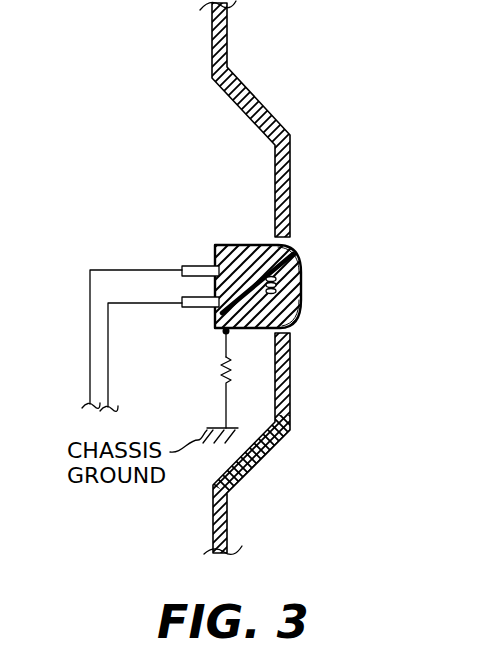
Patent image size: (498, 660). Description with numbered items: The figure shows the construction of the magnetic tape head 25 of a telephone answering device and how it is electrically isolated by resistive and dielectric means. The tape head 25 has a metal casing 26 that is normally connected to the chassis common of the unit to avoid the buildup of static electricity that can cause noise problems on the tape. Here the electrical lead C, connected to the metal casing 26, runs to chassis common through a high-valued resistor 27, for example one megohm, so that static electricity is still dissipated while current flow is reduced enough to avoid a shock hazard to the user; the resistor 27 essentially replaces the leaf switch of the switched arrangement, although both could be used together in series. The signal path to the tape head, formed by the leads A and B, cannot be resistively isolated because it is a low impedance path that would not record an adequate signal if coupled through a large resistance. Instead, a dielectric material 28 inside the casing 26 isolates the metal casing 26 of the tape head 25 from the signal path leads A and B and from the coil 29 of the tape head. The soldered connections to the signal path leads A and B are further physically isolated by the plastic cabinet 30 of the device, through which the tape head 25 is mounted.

The magnetic tape head 25 is at (220, 234).
The metal casing 26 is at (278, 283).
The high-valued resistor 27 is at (226, 393).
The dielectric material 28 is at (297, 249).
The coil 29 is at (297, 318).
The plastic cabinet 30 is at (264, 110).
The lead A is at (106, 269).
The lead B is at (126, 305).
The electrical lead C is at (225, 349).